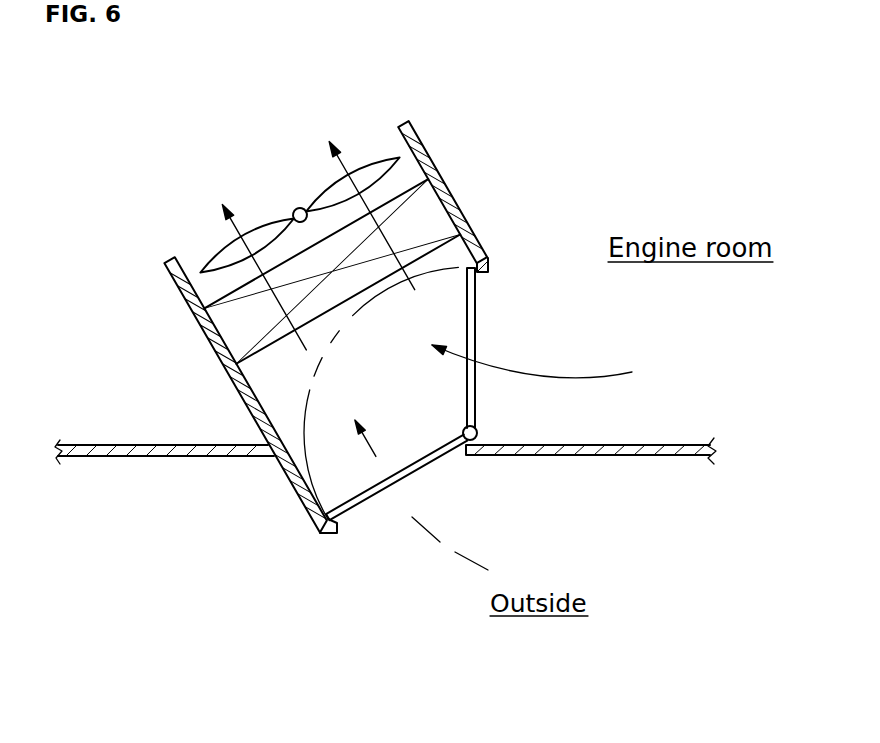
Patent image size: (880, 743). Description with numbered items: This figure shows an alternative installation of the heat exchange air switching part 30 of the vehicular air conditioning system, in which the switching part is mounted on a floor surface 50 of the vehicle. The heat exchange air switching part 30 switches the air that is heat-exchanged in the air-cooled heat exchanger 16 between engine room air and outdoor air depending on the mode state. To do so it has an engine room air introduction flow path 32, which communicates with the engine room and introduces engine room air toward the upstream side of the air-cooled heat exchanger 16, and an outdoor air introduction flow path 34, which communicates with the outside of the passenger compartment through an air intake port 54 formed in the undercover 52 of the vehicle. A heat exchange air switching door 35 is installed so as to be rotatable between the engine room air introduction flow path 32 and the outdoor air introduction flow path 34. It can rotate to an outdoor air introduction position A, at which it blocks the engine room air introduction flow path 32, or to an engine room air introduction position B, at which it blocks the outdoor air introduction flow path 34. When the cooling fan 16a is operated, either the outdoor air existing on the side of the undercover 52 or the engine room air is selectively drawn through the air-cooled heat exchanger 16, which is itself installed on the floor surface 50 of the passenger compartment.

The air-cooled heat exchanger 16 is at (447, 197).
The cooling fan 16a is at (370, 175).
The heat exchange air switching part 30 is at (495, 233).
The engine room air introduction flow path 32 is at (489, 330).
The outdoor air introduction flow path 34 is at (396, 536).
The air intake port 54 is at (373, 505).
The heat exchange air switching door 35 is at (443, 452).
The floor surface 50 is at (385, 470).
The undercover 52 is at (165, 450).
The outdoor air introduction position A is at (477, 410).
The engine room air introduction position B is at (411, 481).